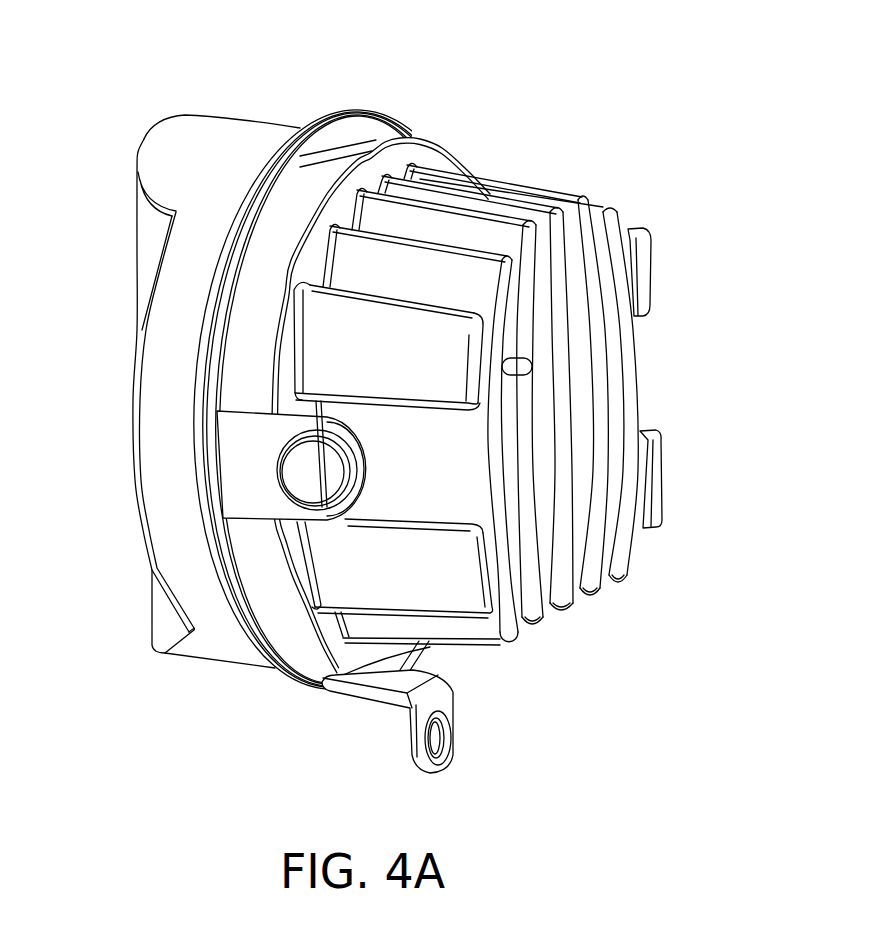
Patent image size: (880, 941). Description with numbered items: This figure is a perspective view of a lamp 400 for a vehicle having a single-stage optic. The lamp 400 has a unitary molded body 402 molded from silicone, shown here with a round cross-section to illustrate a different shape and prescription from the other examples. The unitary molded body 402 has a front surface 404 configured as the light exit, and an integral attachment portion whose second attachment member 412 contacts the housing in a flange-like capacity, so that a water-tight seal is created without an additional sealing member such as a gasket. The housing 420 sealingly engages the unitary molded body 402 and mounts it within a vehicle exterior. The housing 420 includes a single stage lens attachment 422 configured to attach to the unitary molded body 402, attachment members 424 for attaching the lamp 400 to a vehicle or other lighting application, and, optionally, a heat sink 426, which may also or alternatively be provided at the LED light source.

The lamp 400 is at (116, 56).
The unitary molded body 402 is at (141, 658).
The front surface 404 is at (141, 237).
The second attachment member 412 is at (257, 658).
The housing 420 is at (501, 138).
The single stage lens attachment 422 is at (358, 147).
The attachment members 424 is at (453, 743).
The heat sink 426 is at (648, 478).